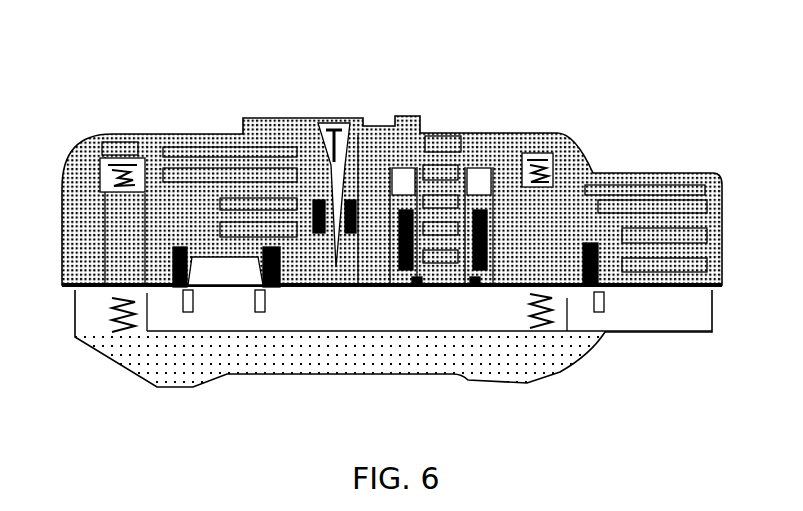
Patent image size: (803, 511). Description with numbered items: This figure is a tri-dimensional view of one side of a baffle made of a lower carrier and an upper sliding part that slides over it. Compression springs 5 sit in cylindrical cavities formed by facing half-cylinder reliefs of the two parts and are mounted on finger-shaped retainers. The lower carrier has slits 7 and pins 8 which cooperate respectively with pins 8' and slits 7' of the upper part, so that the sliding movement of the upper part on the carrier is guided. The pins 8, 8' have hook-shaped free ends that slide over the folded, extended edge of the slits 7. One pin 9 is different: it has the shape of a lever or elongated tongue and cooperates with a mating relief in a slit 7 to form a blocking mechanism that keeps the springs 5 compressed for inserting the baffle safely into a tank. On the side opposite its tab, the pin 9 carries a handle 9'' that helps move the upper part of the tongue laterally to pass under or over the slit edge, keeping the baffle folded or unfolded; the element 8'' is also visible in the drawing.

The compression springs 5 is at (555, 143).
The slits 7 is at (423, 363).
The slits 7' is at (452, 141).
The pins 8 is at (446, 355).
The pins 8' is at (408, 150).
The contact gap region 8'' is at (225, 271).
The pin 9 is at (347, 140).
The handle 9'' is at (305, 88).